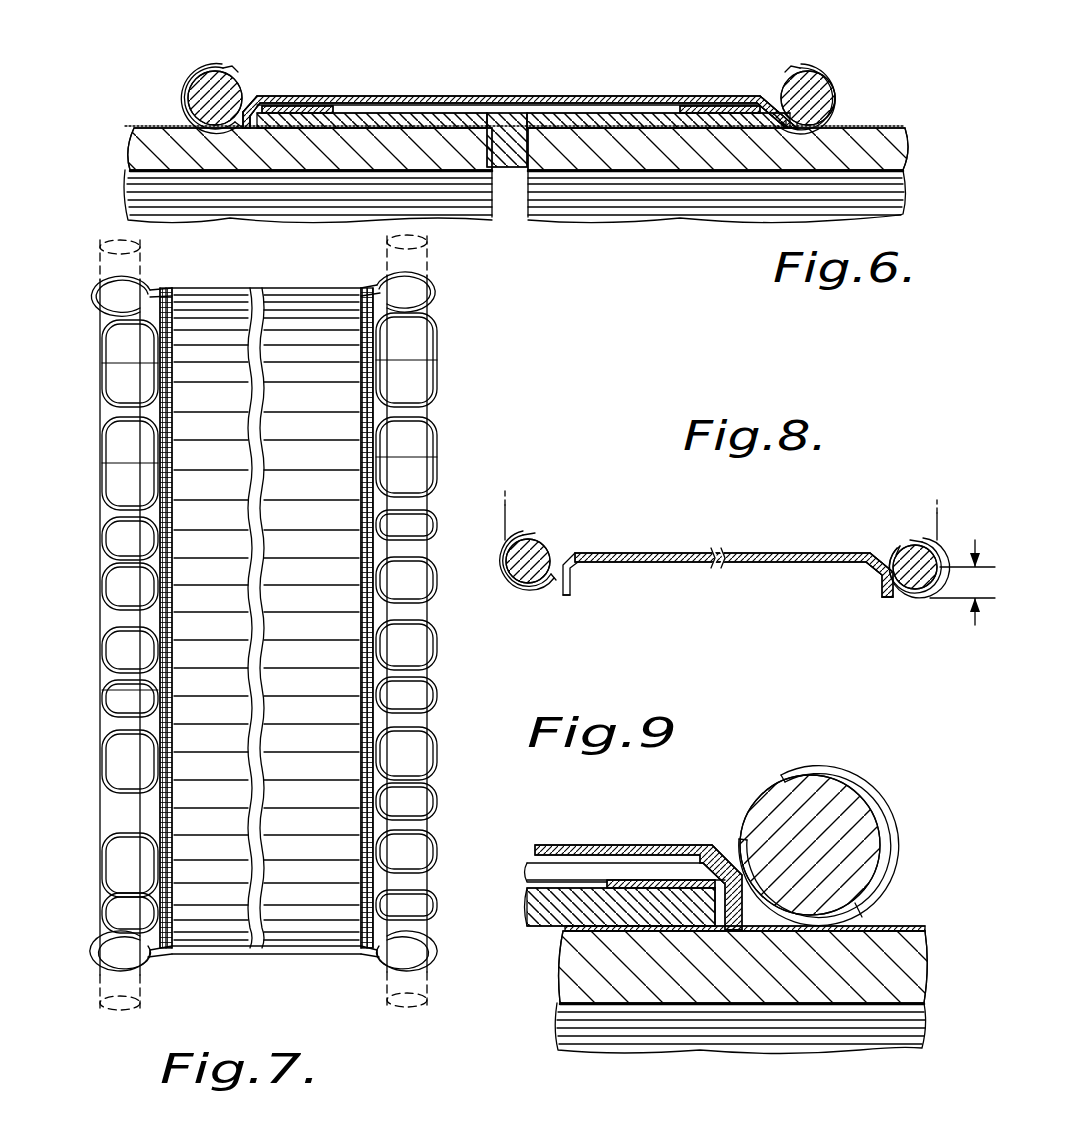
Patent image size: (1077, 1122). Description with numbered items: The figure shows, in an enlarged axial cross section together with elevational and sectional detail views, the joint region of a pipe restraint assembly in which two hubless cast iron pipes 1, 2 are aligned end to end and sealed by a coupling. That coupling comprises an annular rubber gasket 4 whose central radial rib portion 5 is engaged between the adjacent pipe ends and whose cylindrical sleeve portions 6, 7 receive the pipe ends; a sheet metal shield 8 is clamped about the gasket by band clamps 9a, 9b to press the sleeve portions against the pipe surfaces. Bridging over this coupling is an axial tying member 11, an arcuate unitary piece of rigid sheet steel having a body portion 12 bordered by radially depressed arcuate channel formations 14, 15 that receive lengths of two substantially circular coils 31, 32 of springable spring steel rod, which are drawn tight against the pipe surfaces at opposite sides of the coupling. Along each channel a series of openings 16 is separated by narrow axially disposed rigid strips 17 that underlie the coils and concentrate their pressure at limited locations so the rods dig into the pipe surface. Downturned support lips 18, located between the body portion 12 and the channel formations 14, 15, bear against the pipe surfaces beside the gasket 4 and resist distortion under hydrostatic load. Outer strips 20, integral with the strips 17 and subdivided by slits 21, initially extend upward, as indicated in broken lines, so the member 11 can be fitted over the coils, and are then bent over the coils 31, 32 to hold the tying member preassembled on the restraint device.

In FIG. 6, the cast iron pipe 1 is at (290, 150).
In FIG. 6, the cast iron pipe 2 is at (610, 150).
In FIG. 9, the cast iron pipe 2 is at (710, 978).
In FIG. 6, the annular rubber gasket 4 is at (602, 115).
In FIG. 9, the annular rubber gasket 4 is at (545, 915).
In FIG. 6, the central radial rib portion 5 is at (505, 165).
In FIG. 6, the cylindrical sleeve portion 6 is at (398, 95).
In FIG. 6, the cylindrical sleeve portion 7 is at (692, 110).
In FIG. 6, the sheet metal shield 8 is at (495, 112).
In FIG. 9, the sheet metal shield 8 is at (552, 882).
In FIG. 6, the band clamp 9a is at (345, 104).
In FIG. 6, the band clamp 9b is at (722, 110).
In FIG. 9, the band clamp 9b is at (631, 880).
In FIG. 6, the axial tying member 11 is at (355, 94).
In FIG. 7, the axial tying member 11 is at (452, 372).
In FIG. 8, the axial tying member 11 is at (671, 528).
In FIG. 6, the body portion 12 is at (567, 95).
In FIG. 7, the body portion 12 is at (297, 585).
In FIG. 8, the body portion 12 is at (766, 552).
In FIG. 9, the body portion 12 is at (586, 845).
In FIG. 6, the channel formation 14 is at (256, 88).
In FIG. 7, the channel formation 14 is at (157, 283).
In FIG. 8, the channel formation 14 is at (567, 550).
In FIG. 6, the channel formation 15 is at (768, 84).
In FIG. 7, the channel formation 15 is at (379, 276).
In FIG. 8, the channel formation 15 is at (866, 548).
In FIG. 9, the channel formation 15 is at (730, 835).
In FIG. 7, the openings 16 is at (118, 450).
In FIG. 6, the rigid strips 17 is at (205, 140).
In FIG. 7, the rigid strips 17 is at (130, 505).
In FIG. 8, the rigid strips 17 is at (530, 588).
In FIG. 9, the rigid strips 17 is at (812, 930).
In FIG. 6, the support lips 18 is at (282, 108).
In FIG. 7, the support lips 18 is at (170, 345).
In FIG. 8, the support lips 18 is at (568, 592).
In FIG. 9, the support lips 18 is at (722, 903).
In FIG. 6, the outer strips 20 is at (205, 80).
In FIG. 7, the outer strips 20 is at (103, 318).
In FIG. 8, the outer strips 20 is at (525, 540).
In FIG. 9, the outer strips 20 is at (858, 782).
In FIG. 7, the slits 21 is at (108, 355).
In FIG. 6, the coil 31 is at (228, 80).
In FIG. 7, the coil 31 is at (429, 250).
In FIG. 8, the coil 31 is at (562, 545).
In FIG. 6, the coil 32 is at (790, 95).
In FIG. 7, the coil 32 is at (100, 262).
In FIG. 8, the coil 32 is at (896, 555).
In FIG. 9, the coil 32 is at (760, 810).